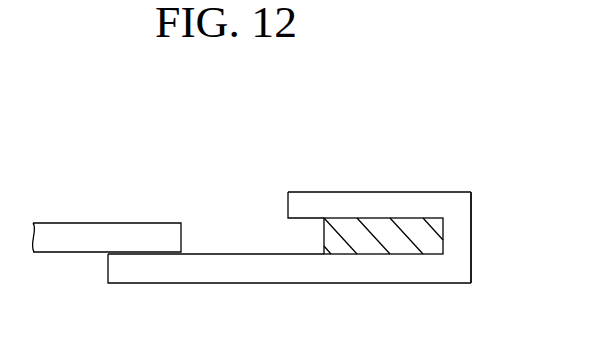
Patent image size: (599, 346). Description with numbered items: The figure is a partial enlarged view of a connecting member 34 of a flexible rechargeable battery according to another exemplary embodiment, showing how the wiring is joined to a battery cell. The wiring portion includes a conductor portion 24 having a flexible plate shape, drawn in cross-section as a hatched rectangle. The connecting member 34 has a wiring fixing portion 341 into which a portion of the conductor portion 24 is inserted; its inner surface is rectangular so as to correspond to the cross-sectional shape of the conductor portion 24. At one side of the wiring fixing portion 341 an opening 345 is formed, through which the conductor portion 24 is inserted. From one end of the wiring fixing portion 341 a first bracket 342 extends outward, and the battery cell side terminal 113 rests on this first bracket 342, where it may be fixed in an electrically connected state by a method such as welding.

The battery cell side terminal 113 is at (147, 238).
The connecting member 34 is at (334, 248).
The wiring fixing portion 341 is at (442, 266).
The first bracket 342 is at (148, 267).
The opening 345 is at (306, 230).
The conductor portion 24 is at (367, 240).